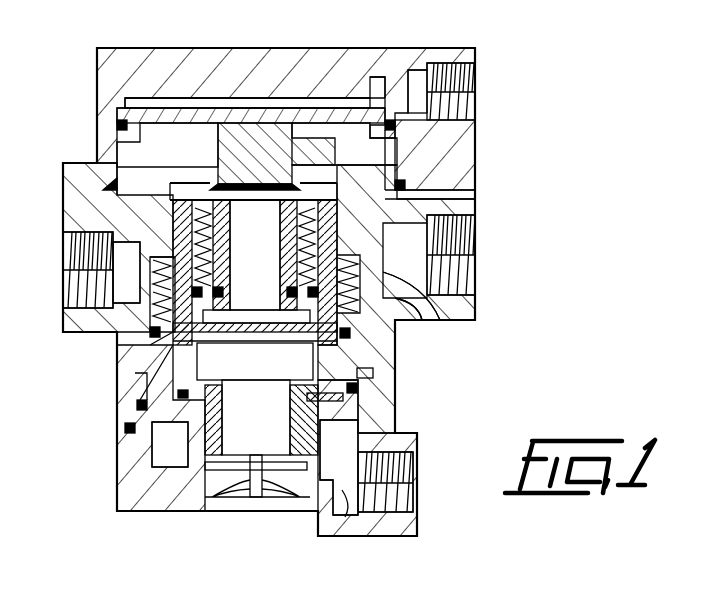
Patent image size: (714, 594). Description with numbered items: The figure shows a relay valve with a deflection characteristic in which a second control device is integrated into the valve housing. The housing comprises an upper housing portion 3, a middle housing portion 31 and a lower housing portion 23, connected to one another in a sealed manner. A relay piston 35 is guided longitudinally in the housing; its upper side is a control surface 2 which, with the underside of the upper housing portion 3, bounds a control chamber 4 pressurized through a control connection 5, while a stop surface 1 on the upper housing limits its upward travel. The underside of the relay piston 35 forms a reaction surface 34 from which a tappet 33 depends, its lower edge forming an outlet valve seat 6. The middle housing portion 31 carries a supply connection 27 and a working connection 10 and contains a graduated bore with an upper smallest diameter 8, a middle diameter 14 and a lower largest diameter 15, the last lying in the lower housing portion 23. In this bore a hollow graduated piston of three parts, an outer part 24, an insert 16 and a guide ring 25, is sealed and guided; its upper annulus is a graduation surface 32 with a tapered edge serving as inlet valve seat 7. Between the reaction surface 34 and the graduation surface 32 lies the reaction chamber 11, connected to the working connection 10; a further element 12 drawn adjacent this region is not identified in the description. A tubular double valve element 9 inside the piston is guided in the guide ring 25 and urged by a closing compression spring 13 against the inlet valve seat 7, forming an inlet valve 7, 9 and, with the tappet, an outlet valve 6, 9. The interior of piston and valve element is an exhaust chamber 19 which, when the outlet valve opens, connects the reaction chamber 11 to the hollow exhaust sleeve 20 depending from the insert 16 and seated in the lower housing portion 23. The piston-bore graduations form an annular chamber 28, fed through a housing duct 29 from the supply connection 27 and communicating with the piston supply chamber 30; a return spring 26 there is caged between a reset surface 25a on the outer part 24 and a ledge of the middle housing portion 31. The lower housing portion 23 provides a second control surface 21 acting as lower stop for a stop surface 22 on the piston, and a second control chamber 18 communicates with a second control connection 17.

The stop surface 1 is at (122, 104).
The control surface 2 is at (210, 98).
The upper housing portion 3 is at (323, 63).
The control chamber 4 is at (377, 80).
The control connection 5 is at (462, 101).
The outlet valve seat 6 is at (296, 183).
The inlet valve seat 7 is at (305, 200).
The upper smallest diameter 8 is at (330, 206).
The tubular double valve element 9 is at (284, 248).
The working connection 10 is at (462, 283).
The reaction chamber 11 is at (428, 321).
The passage 12 is at (398, 322).
The closing compression spring 13 is at (303, 258).
The middle diameter 14 is at (350, 338).
The lower largest diameter 15 is at (373, 374).
The insert 16 is at (322, 384).
The second control connection 17 is at (402, 497).
The second control chamber 18 is at (342, 517).
The exhaust chamber 19 is at (360, 385).
The exhaust sleeve 20 is at (212, 432).
The second control surface 21 is at (173, 427).
The stop surface 22 is at (145, 415).
The lower housing portion 23 is at (140, 484).
The outer part 24 is at (168, 398).
The guide ring 25 is at (205, 332).
The reset surface 25a is at (168, 280).
The return spring 26 is at (348, 262).
The supply connection 27 is at (76, 296).
The annular chamber 28 is at (158, 298).
The housing duct 29 is at (143, 272).
The piston supply chamber 30 is at (197, 232).
The middle housing portion 31 is at (82, 209).
The graduation surface 32 is at (118, 176).
The tappet 33 is at (240, 146).
The reaction surface 34 is at (150, 142).
The relay piston 35 is at (140, 117).